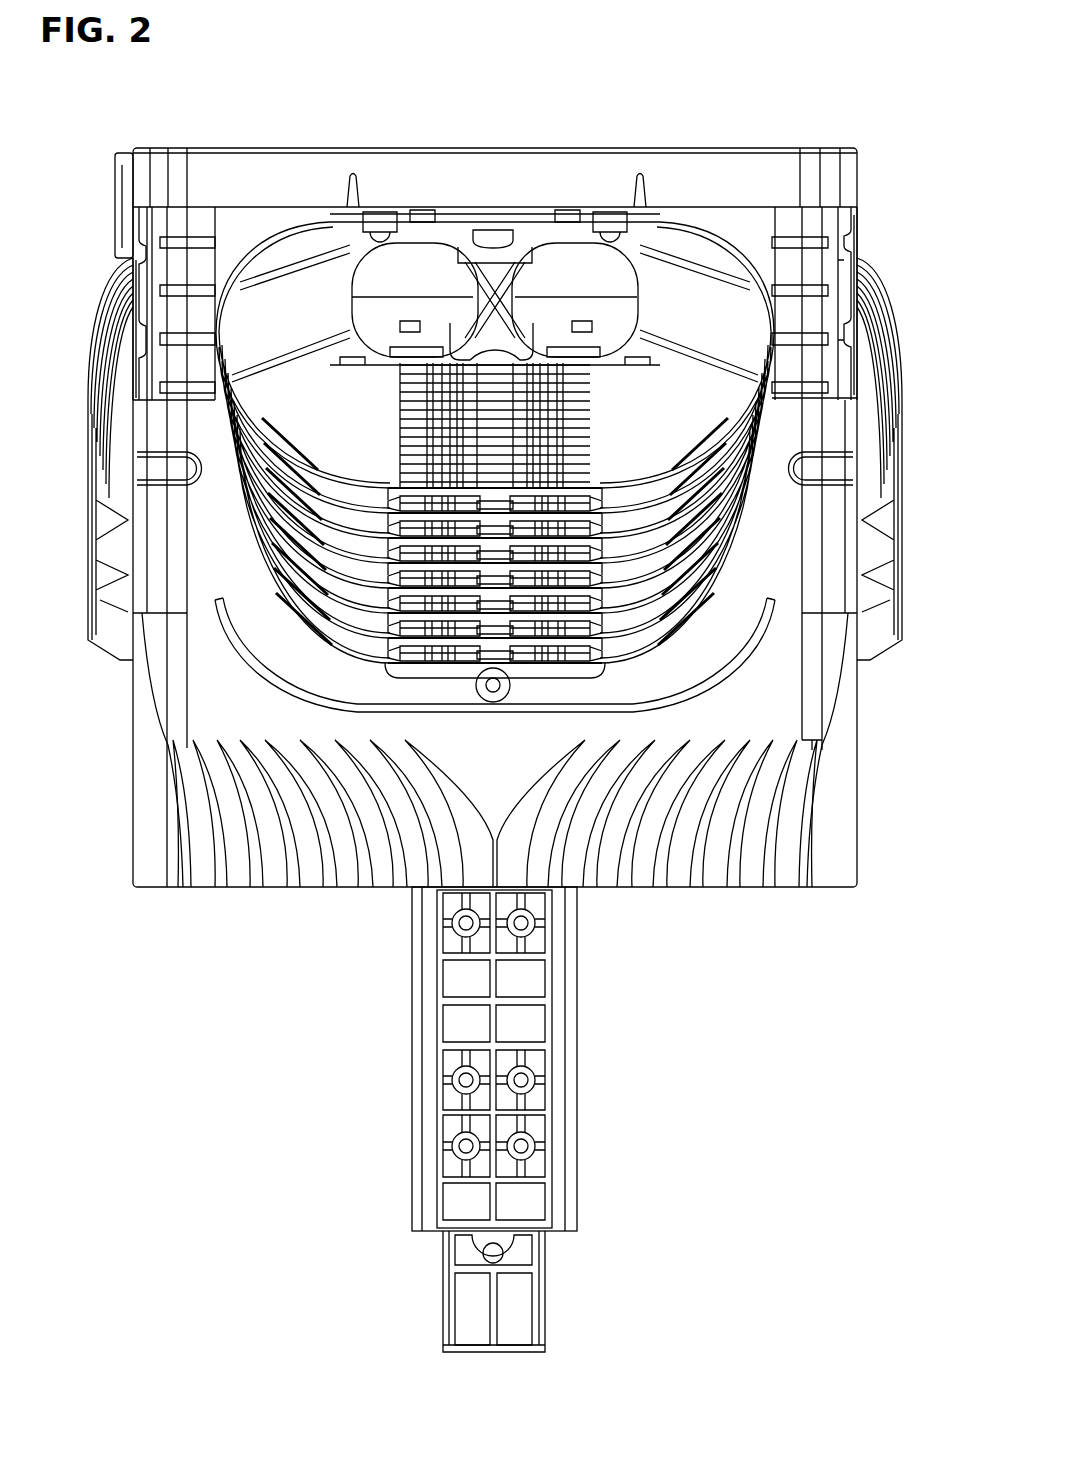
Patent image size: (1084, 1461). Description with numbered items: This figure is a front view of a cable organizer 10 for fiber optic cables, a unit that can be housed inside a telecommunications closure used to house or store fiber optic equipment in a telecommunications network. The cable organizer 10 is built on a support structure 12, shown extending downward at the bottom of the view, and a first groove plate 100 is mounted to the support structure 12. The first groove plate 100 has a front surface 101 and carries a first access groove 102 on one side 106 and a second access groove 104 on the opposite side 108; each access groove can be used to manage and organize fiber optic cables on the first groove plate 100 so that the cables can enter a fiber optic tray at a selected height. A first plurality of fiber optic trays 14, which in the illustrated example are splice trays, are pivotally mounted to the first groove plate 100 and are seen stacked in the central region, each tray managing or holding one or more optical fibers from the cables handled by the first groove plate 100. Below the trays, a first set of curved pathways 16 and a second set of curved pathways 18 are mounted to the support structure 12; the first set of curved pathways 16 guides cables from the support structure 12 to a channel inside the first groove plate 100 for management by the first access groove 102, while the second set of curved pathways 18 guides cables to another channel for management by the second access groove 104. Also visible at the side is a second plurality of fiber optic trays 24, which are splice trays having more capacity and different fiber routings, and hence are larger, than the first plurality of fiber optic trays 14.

The cable organizer 10 is at (760, 116).
The support structure 12 is at (577, 1093).
The first plurality of fiber optic trays 14 is at (215, 440).
The first set of curved pathways 16 is at (782, 829).
The second set of curved pathways 18 is at (178, 806).
The second plurality of fiber optic trays 24 is at (898, 428).
The first groove plate 100 is at (851, 265).
The front surface 101 is at (722, 222).
The first access groove 102 is at (845, 220).
The second access groove 104 is at (143, 278).
The side 106 is at (858, 293).
The opposite side 108 is at (130, 363).